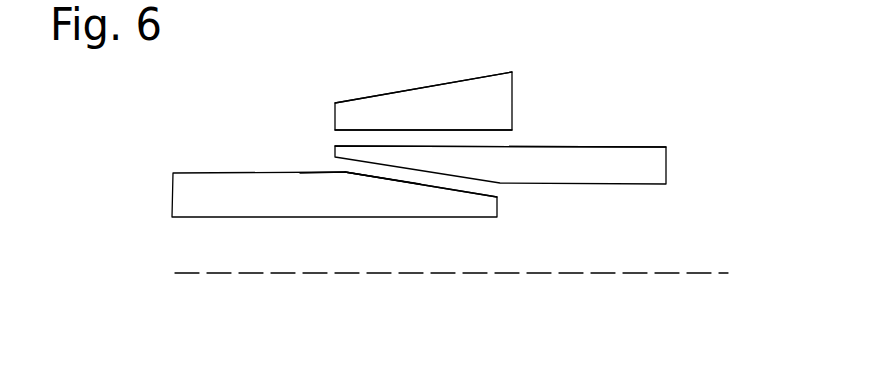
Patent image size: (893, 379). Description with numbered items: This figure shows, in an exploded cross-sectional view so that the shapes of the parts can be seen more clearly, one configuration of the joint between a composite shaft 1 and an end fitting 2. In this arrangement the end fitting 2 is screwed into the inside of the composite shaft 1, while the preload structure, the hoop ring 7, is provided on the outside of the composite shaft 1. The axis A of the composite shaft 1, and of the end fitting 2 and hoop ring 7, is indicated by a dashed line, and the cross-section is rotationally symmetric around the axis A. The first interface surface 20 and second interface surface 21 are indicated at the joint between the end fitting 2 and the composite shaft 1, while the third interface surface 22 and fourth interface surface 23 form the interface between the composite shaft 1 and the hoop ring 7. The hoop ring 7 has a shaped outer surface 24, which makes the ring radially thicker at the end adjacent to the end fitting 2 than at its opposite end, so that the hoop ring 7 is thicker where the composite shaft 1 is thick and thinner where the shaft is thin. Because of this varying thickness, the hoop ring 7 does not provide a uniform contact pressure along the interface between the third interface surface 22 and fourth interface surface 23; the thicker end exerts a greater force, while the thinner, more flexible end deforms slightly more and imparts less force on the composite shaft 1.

The composite shaft 1 is at (645, 158).
The end fitting 2 is at (200, 173).
The hoop ring 7 is at (365, 107).
The first interface surface 20 is at (353, 173).
The second interface surface 21 is at (380, 178).
The third interface surface 22 is at (429, 147).
The fourth interface surface 23 is at (481, 131).
The outer surface 24 is at (443, 85).
The axis A is at (710, 272).